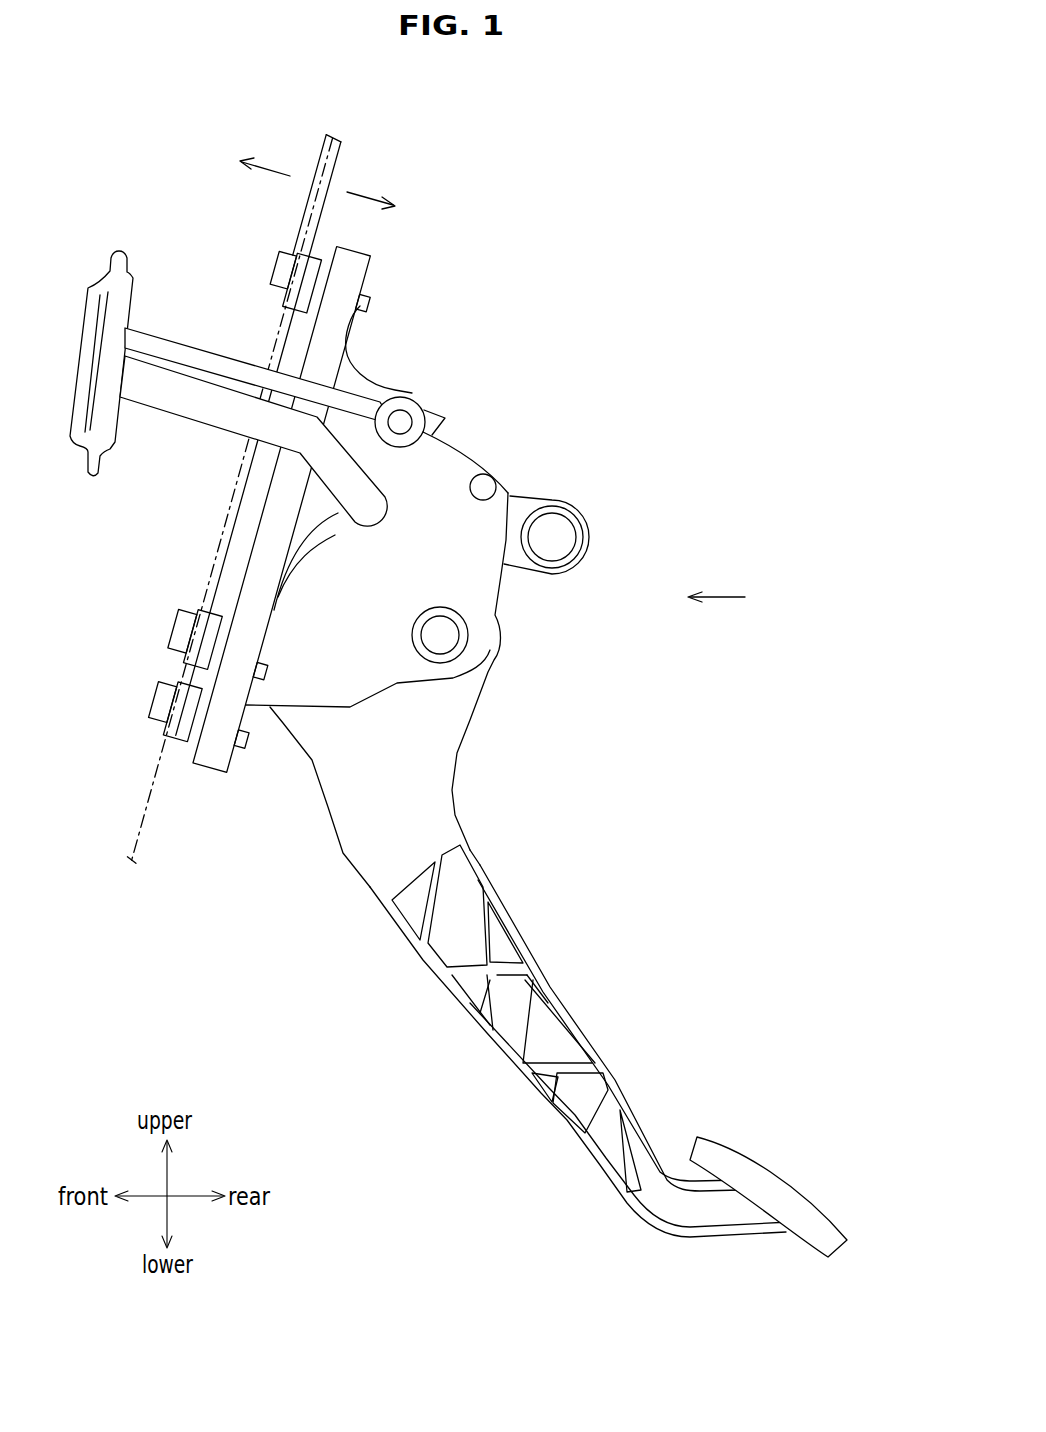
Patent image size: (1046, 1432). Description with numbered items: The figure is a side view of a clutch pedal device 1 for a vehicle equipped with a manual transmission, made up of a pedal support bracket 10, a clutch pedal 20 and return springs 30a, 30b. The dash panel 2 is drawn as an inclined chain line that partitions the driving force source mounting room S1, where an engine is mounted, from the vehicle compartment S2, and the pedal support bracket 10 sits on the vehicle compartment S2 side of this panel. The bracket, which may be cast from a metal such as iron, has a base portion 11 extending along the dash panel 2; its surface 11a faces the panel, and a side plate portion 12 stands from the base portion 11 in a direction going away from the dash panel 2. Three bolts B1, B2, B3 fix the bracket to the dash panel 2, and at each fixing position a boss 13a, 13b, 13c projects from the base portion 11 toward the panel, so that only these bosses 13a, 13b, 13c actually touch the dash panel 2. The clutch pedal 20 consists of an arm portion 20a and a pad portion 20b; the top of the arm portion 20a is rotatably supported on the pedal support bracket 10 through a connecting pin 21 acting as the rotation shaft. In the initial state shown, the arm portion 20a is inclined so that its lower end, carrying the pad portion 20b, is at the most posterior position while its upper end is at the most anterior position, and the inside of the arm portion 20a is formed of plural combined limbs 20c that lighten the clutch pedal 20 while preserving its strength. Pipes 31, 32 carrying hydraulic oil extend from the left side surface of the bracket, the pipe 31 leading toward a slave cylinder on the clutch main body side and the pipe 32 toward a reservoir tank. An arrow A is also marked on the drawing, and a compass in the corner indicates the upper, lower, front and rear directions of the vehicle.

The clutch pedal device 1 is at (568, 267).
The dash panel 2 is at (345, 151).
The pedal support bracket 10 is at (467, 437).
The base portion 11 is at (352, 318).
The mounting plate surface 11a is at (268, 548).
The side plate portion 12 is at (470, 575).
The boss 13a is at (322, 248).
The boss 13b is at (222, 622).
The boss 13c is at (183, 758).
The clutch pedal 20 is at (584, 1029).
The arm portion 20a is at (437, 797).
The pad portion 20b is at (758, 1168).
The limb 20c is at (437, 895).
The connecting pin 21 is at (462, 637).
The return spring 30a is at (569, 505).
The return spring 30b is at (555, 494).
The pipe 31 is at (203, 352).
The pipe 32 is at (172, 418).
The bolt B1 is at (272, 267).
The bolt B2 is at (176, 633).
The bolt B3 is at (152, 705).
The driving force source mounting room S1 is at (244, 162).
The vehicle compartment S2 is at (387, 210).
The viewing direction A is at (729, 595).